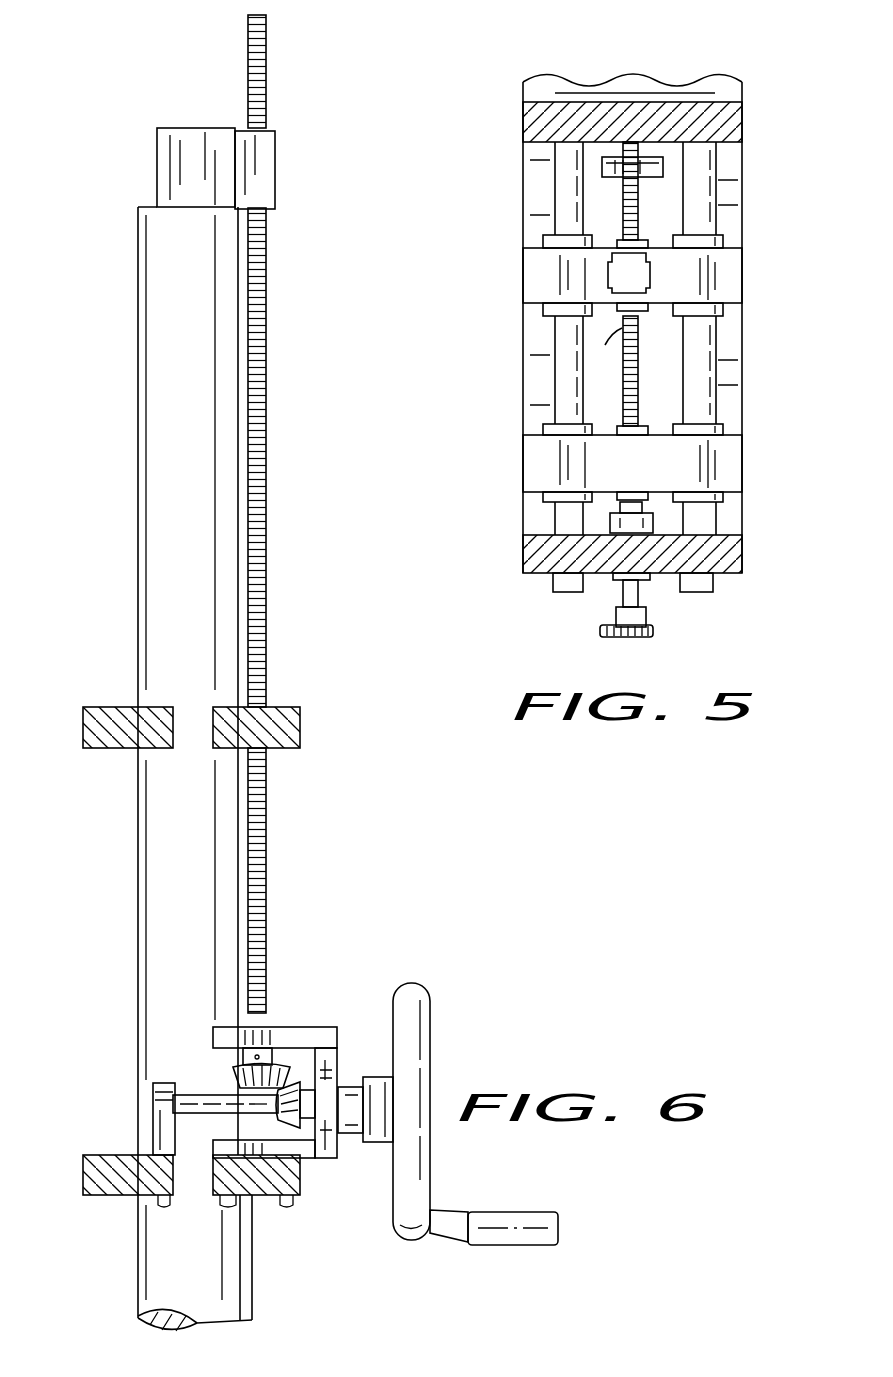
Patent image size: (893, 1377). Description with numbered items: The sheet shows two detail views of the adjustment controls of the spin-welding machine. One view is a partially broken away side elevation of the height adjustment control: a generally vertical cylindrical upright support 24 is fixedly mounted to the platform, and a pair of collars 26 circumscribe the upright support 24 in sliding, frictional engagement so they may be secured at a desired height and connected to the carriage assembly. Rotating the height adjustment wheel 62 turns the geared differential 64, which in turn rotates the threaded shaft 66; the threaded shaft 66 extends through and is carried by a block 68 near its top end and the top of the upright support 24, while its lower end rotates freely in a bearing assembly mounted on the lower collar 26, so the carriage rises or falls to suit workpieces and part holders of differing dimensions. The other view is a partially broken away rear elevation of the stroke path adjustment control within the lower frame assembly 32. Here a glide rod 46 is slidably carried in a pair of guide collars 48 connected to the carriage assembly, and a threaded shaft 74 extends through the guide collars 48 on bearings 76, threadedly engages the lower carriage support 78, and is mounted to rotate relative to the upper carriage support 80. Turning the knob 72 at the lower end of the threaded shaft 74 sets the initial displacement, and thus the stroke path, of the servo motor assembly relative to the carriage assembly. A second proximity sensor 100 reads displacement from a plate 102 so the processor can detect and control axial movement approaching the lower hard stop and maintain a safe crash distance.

In FIG. 6, the upright support 24 is at (160, 317).
In FIG. 6, the threaded shaft 66 is at (265, 330).
In FIG. 6, the block 68 is at (257, 166).
In FIG. 6, the collars 26 is at (300, 722).
In FIG. 6, the geared differential 64 is at (235, 1075).
In FIG. 6, the height adjustment wheel 62 is at (415, 1027).
In FIG. 5, the lower frame assembly 32 is at (730, 357).
In FIG. 5, the upper carriage support 80 is at (745, 122).
In FIG. 5, the lower carriage support 78 is at (745, 548).
In FIG. 5, the glide rod 46 is at (560, 350).
In FIG. 5, the bearings 76 is at (620, 245).
In FIG. 5, the guide collars 48 is at (730, 268).
In FIG. 5, the threaded shaft 74 is at (640, 338).
In FIG. 5, the plate 102 is at (660, 172).
In FIG. 5, the second proximity sensor 100 is at (565, 277).
In FIG. 5, the knob 72 is at (650, 635).